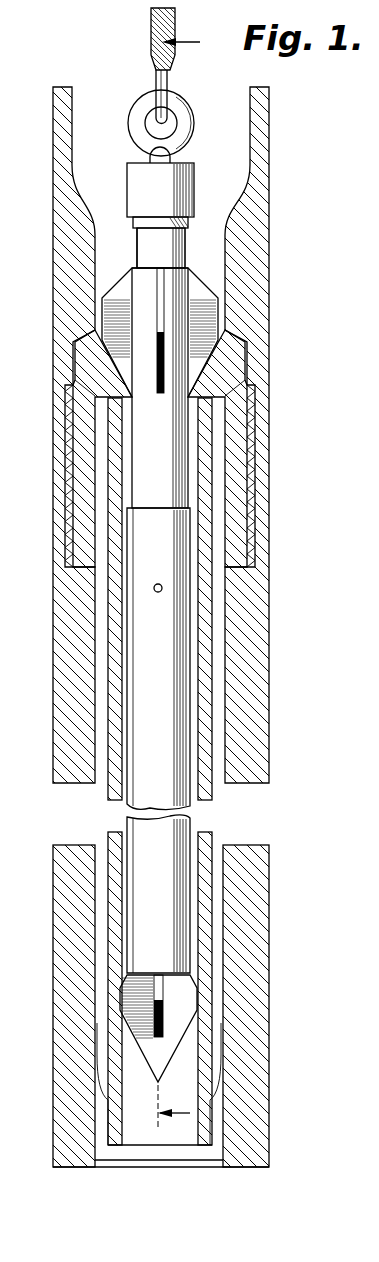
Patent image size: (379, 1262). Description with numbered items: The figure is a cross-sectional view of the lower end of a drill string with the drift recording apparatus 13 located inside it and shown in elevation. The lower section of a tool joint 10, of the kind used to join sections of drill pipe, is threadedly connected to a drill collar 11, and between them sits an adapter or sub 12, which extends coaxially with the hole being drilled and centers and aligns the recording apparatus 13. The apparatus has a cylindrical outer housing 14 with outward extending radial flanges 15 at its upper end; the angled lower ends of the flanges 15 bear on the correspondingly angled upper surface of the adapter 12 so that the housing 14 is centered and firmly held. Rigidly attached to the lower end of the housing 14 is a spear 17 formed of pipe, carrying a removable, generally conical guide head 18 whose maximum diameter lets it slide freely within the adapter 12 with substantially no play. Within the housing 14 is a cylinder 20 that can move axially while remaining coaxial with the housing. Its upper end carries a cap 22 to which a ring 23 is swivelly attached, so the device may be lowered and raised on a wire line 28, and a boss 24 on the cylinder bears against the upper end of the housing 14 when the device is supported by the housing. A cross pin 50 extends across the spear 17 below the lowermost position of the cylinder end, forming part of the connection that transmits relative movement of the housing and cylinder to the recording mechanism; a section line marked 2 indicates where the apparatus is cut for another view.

The section line 2- 2 is at (181, 583).
The tool joint 10 is at (270, 170).
The drill collar 11 is at (262, 635).
The adapter 12 is at (245, 365).
The drift recording apparatus 13 is at (207, 318).
The outer housing 14 is at (187, 457).
The radial flanges 15 is at (197, 283).
The spear 17 is at (192, 675).
The guide head 18 is at (187, 1000).
The cylinder 20 is at (140, 257).
The cap 22 is at (194, 188).
The ring 23 is at (192, 123).
The boss 24 is at (188, 228).
The wire line 28 is at (155, 33).
The cross pin 50 is at (162, 588).